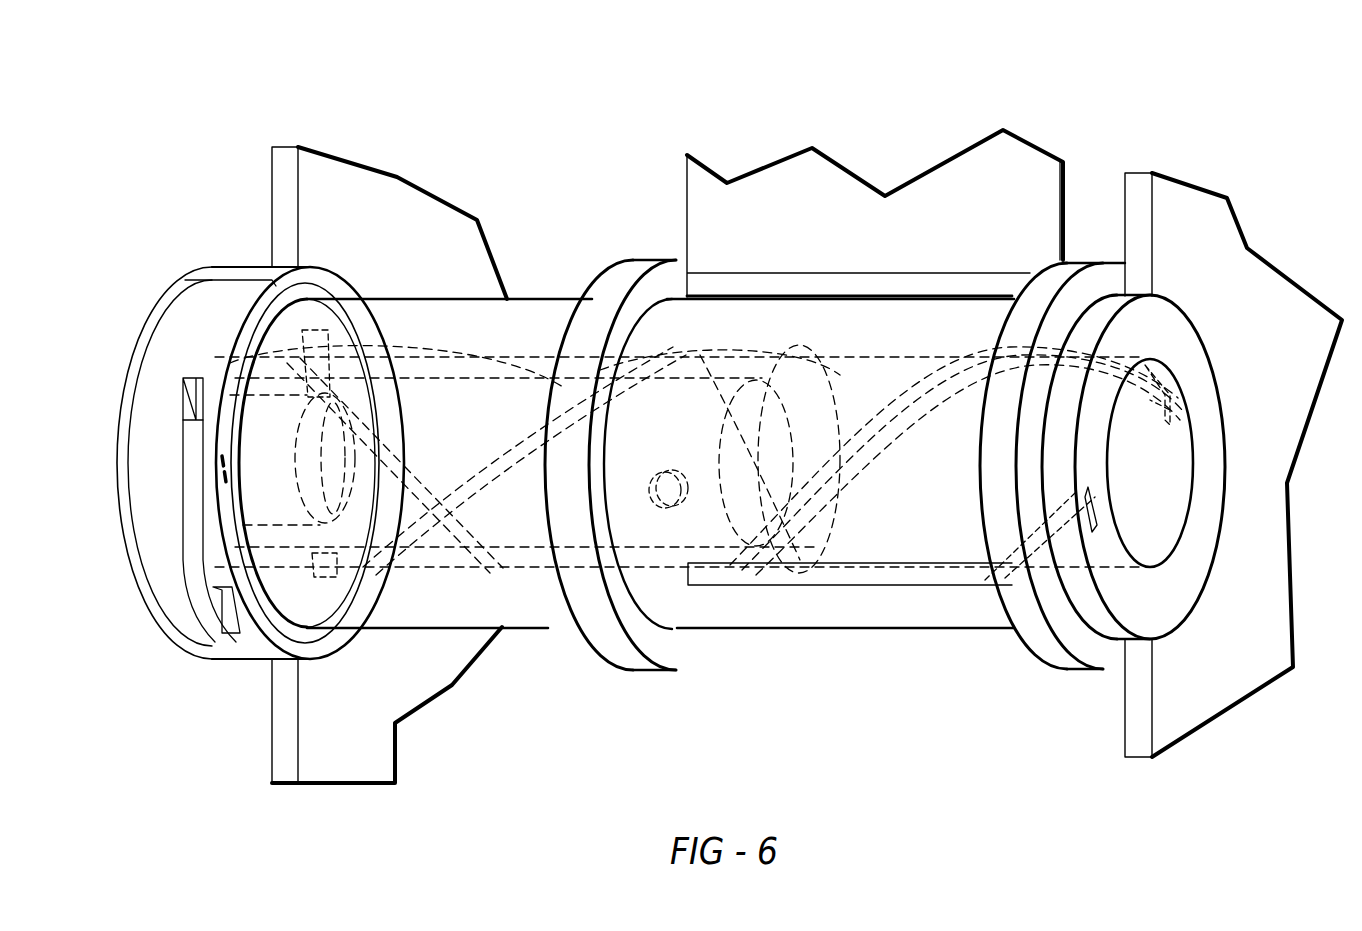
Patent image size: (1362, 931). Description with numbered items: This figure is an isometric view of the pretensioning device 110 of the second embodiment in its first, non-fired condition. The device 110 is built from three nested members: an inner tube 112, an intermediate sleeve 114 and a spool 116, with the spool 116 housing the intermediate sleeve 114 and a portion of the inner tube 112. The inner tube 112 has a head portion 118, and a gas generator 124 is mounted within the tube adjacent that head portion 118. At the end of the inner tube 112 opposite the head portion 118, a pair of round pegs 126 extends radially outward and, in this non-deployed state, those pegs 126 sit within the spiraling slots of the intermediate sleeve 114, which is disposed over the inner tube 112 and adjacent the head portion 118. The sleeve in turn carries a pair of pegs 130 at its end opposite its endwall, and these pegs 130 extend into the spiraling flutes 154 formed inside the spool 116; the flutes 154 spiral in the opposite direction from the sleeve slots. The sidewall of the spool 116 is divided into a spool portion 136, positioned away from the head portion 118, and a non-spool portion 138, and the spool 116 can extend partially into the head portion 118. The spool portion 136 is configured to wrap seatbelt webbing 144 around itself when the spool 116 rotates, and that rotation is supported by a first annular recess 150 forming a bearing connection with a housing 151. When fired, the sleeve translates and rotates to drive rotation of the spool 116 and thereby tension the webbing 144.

The pretensioning device 110 is at (627, 152).
The inner tube 112 is at (688, 427).
The intermediate sleeve 114 is at (550, 553).
The spool 116 is at (960, 630).
The head portion 118 is at (235, 660).
The gas generator 124 is at (820, 523).
The round pegs 126 is at (667, 500).
The pegs 130 is at (240, 470).
The spool portion 136 is at (877, 150).
The non-spool portion 138 is at (545, 233).
The seatbelt webbing 144 is at (957, 190).
The first annular recess 150 is at (1110, 296).
The housing 151 is at (1233, 307).
The spiraling flutes 154 is at (392, 350).